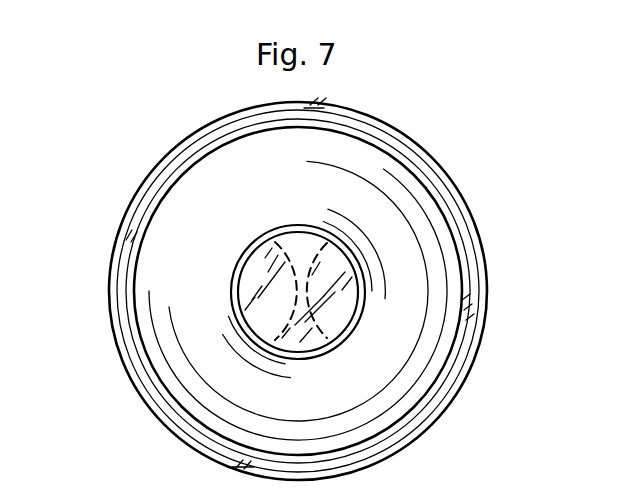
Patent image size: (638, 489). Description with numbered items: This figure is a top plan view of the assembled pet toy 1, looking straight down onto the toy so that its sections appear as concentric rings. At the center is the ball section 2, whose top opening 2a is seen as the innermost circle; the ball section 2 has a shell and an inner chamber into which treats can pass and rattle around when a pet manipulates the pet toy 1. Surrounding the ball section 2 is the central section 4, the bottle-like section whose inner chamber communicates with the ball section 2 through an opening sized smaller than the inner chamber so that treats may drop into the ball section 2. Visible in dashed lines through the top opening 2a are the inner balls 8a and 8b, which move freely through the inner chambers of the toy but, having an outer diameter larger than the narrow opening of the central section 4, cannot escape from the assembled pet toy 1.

The pet toy 1 is at (468, 158).
The ball section 2 is at (397, 372).
The top opening 2a is at (288, 325).
The central section 4 is at (137, 373).
The inner ball 8a is at (257, 277).
The inner ball 8b is at (353, 287).